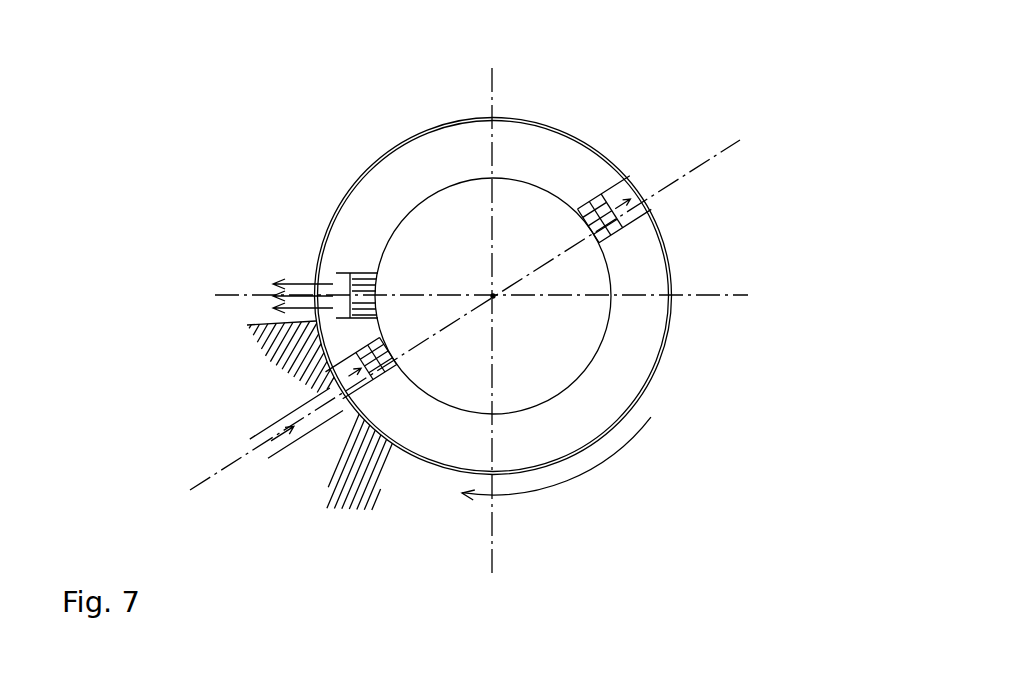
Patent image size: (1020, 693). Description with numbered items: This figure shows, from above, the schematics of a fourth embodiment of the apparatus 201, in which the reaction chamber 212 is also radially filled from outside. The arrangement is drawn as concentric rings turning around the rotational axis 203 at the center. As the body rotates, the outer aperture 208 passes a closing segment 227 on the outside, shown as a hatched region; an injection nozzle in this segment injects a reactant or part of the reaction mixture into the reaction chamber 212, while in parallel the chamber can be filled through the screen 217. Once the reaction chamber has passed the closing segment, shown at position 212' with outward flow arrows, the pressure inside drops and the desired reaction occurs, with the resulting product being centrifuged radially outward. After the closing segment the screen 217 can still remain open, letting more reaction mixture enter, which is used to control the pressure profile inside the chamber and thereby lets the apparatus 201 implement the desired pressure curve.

The apparatus 201 is at (716, 104).
The rotational axis 203 is at (496, 299).
The outer aperture 208 is at (632, 184).
The reaction chamber 212 is at (323, 459).
The reaction chamber after passing the closing segment 212' is at (315, 244).
The screen 217 is at (393, 346).
The closing segment 227 is at (290, 377).